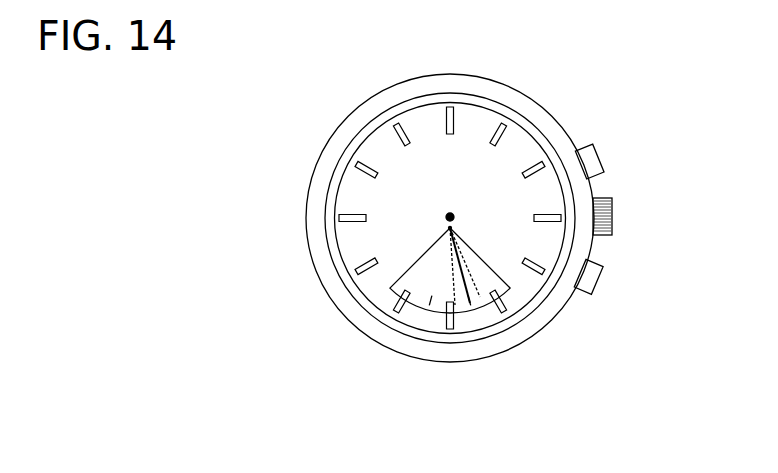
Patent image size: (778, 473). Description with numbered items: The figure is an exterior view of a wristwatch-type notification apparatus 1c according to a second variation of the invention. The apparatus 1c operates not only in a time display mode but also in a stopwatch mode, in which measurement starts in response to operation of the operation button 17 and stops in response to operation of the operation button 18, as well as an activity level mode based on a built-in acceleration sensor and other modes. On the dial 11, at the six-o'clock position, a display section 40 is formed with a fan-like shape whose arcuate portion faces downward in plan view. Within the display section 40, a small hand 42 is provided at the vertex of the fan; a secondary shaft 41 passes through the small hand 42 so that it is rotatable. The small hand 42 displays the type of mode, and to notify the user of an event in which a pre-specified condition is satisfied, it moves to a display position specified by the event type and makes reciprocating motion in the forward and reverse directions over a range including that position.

The wristwatch-type notification apparatus 1c is at (605, 94).
The dial 11 is at (375, 202).
The operation button 17 is at (594, 148).
The operation button 18 is at (590, 277).
The display section 40 is at (415, 310).
The secondary shaft 41 is at (449, 228).
The small hand 42 is at (465, 275).